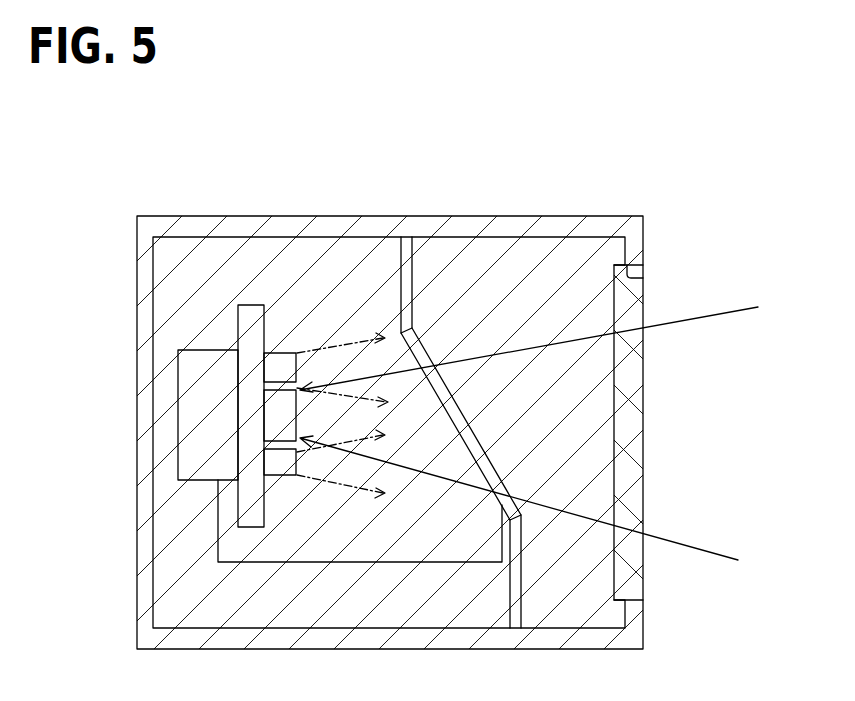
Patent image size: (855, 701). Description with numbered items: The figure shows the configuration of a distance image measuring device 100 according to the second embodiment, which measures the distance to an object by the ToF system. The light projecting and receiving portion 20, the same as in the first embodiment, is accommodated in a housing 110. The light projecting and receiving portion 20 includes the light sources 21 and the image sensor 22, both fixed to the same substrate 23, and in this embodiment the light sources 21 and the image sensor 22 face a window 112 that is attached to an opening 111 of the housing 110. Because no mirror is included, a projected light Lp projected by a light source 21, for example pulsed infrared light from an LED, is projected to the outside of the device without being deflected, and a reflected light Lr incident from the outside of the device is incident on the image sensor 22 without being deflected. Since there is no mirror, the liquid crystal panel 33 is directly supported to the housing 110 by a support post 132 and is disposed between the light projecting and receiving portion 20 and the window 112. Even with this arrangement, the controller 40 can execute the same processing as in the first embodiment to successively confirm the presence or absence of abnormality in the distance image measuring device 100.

The distance image measuring device 100 is at (599, 128).
The housing 110 is at (611, 203).
The opening 111 is at (644, 278).
The window 112 is at (644, 437).
The support post 132 is at (413, 280).
The liquid crystal panel 33 is at (418, 341).
The light projecting and receiving portion 20 is at (261, 272).
The light sources 21 is at (283, 352).
The image sensor 22 is at (297, 416).
The substrate 23 is at (237, 312).
The controller 40 is at (200, 481).
The projected light Lp is at (356, 416).
The reflected light Lr is at (546, 435).